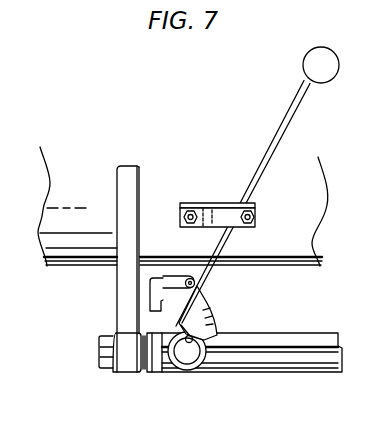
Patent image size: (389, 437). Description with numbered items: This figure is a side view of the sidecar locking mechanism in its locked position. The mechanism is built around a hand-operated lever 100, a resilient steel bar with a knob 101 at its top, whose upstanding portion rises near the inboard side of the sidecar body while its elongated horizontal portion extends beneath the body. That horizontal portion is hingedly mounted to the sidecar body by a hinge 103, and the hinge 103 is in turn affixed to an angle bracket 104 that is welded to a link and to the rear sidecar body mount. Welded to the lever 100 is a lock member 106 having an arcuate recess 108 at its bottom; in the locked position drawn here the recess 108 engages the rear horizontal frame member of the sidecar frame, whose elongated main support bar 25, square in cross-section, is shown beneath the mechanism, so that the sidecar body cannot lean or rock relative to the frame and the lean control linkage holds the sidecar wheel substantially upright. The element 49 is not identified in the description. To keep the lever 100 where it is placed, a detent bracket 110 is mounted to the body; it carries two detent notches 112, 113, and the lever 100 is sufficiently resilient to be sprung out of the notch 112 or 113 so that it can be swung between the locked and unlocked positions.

The main support bar 25 is at (271, 370).
The tubular clamp ring 49 is at (186, 373).
The hand-operated lever 100 is at (283, 121).
The knob 101 is at (309, 49).
The hinge 103 is at (173, 287).
The angle bracket 104 is at (147, 283).
The lock member 106 is at (212, 302).
The arcuate recess 108 is at (214, 330).
The detent bracket 110 is at (205, 231).
The detent notch 112 is at (191, 205).
The detent notch 113 is at (243, 207).